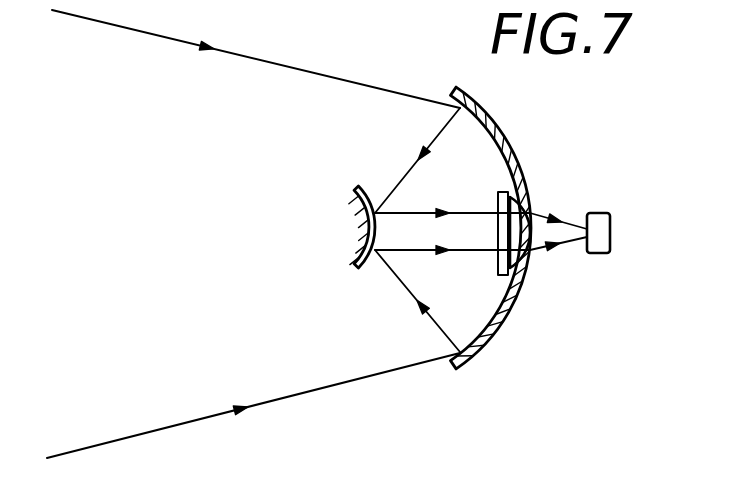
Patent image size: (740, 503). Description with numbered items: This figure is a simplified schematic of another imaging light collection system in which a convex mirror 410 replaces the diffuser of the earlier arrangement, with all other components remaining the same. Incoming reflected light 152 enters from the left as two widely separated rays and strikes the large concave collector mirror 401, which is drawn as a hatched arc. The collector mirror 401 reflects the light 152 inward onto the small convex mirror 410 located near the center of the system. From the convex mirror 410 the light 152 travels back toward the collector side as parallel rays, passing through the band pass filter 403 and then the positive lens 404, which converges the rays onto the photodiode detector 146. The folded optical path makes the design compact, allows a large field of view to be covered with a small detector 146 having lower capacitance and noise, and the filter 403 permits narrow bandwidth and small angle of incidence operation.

The reflected light 152 is at (329, 74).
The concave collector mirror 401 is at (501, 160).
The convex mirror 410 is at (352, 182).
The band pass filter 403 is at (498, 200).
The positive lens 404 is at (528, 212).
The photodiode detector 146 is at (616, 231).